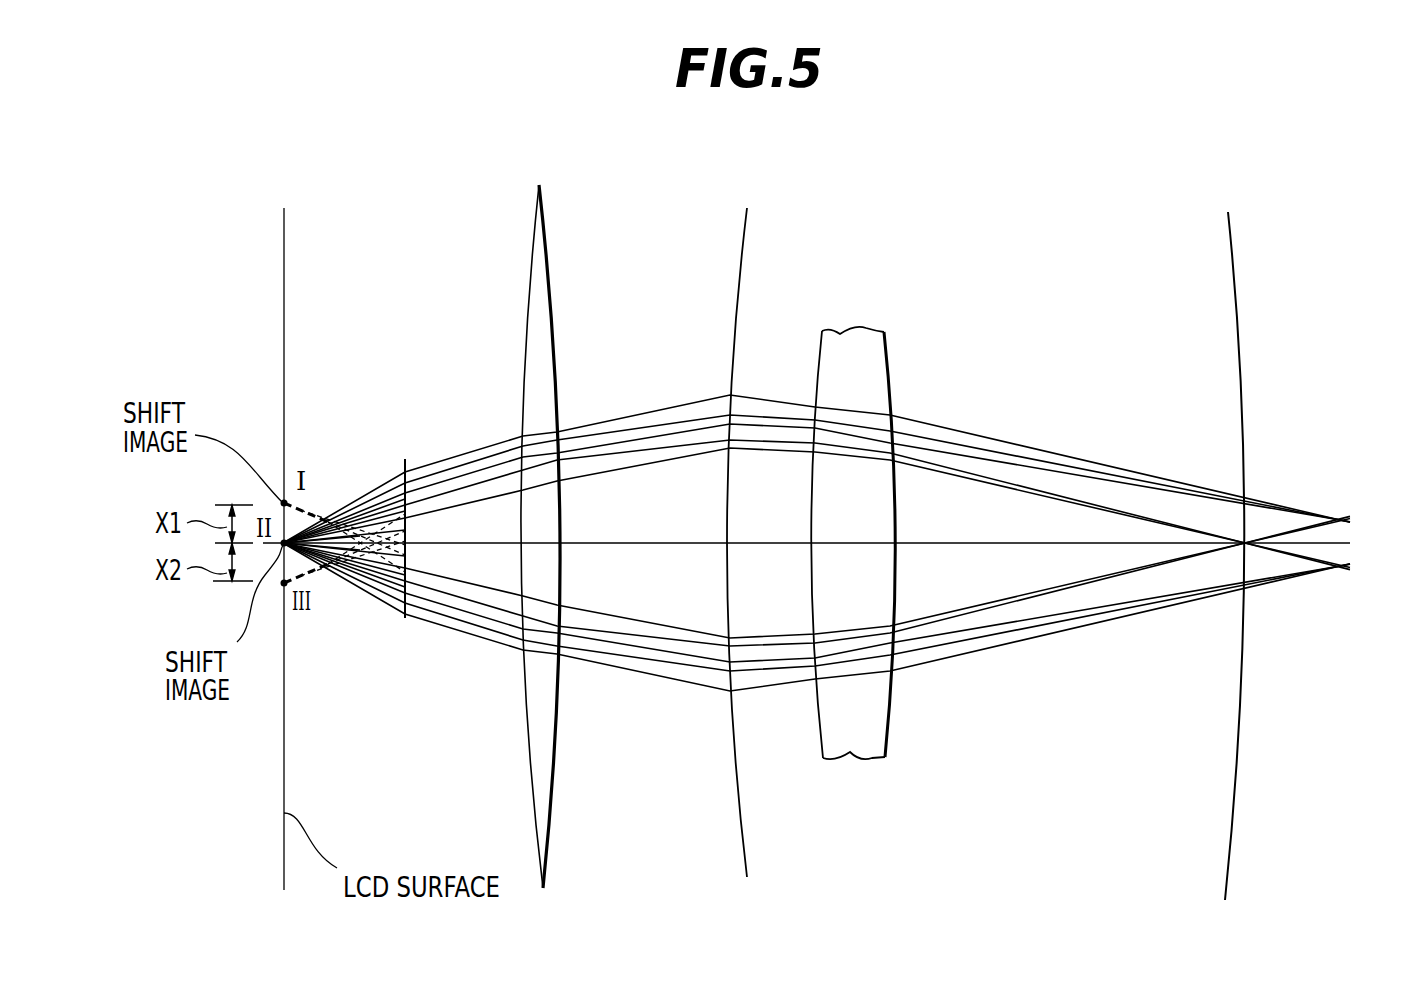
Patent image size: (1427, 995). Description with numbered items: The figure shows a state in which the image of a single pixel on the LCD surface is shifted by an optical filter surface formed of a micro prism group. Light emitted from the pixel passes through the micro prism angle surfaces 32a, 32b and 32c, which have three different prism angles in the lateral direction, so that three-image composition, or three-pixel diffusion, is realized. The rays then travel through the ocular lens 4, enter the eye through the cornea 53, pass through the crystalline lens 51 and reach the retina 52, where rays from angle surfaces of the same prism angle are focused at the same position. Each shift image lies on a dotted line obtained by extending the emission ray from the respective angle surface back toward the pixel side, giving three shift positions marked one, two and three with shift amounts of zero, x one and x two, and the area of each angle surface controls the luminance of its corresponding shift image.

The ocular lens 4 is at (542, 245).
The angle surface 32a is at (816, 603).
The angle surface 32b is at (413, 468).
The angle surface 32c is at (816, 482).
The crystalline lens 51 is at (838, 343).
The retina 52 is at (1240, 345).
The cornea 53 is at (747, 235).